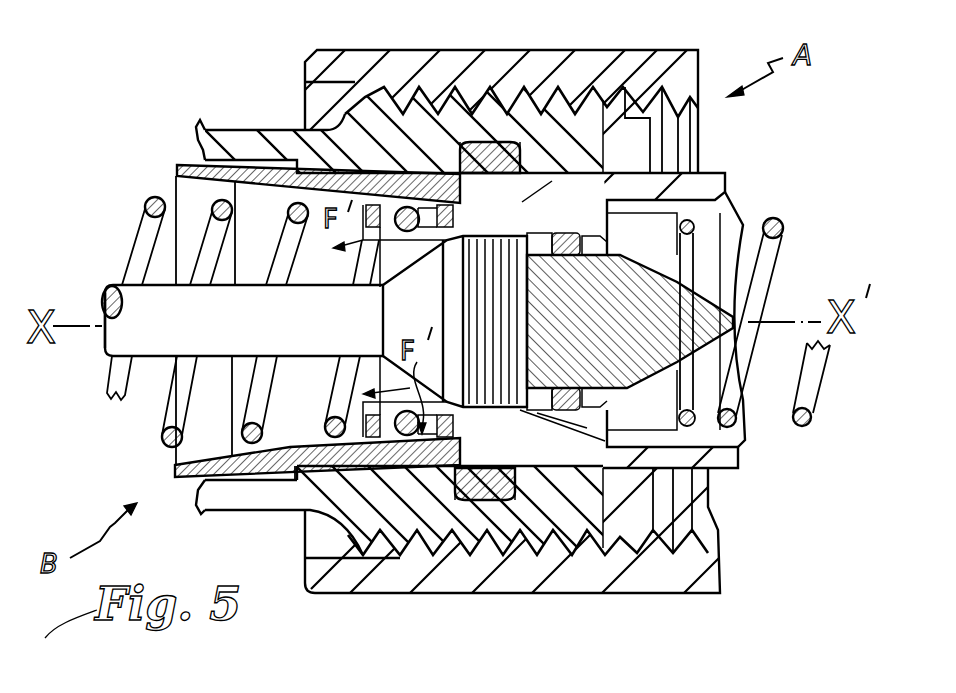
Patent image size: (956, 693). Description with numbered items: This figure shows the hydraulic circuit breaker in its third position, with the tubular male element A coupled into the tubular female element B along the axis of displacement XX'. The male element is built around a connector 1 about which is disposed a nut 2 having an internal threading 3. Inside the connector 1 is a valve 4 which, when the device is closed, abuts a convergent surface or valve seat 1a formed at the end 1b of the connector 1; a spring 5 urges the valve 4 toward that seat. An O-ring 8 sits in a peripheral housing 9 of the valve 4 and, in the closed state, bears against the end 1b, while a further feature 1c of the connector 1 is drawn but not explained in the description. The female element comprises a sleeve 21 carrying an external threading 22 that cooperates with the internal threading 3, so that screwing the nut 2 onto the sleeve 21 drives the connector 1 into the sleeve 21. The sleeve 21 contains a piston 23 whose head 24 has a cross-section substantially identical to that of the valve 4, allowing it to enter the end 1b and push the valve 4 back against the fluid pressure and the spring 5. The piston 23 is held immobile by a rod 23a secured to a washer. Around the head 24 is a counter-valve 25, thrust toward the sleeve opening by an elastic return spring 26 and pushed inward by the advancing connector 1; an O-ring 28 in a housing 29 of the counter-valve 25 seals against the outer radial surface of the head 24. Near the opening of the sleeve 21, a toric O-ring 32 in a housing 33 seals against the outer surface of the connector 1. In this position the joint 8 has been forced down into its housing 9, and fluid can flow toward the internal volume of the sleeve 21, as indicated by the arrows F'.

The connector 1 is at (738, 463).
The convergent surface or valve seat 1a is at (583, 220).
The end of the connector 1b is at (567, 447).
The groove of body 1c is at (707, 252).
The nut 2 is at (673, 63).
The internal threading 3 is at (703, 123).
The valve 4 is at (637, 295).
The spring 5 is at (816, 377).
The O-ring 8 is at (603, 565).
The peripheral housing 9 is at (585, 240).
The sleeve 21 is at (248, 135).
The external threading 22 is at (399, 97).
The piston 23 is at (157, 367).
The rod 23a is at (160, 300).
The head of the piston 24 is at (483, 300).
The counter-valve 25 is at (280, 458).
The elastic return spring 26 is at (147, 200).
The O-ring 28 is at (400, 440).
The housing 29 is at (430, 440).
The toric O-ring 32 is at (470, 140).
The housing 33 is at (507, 140).